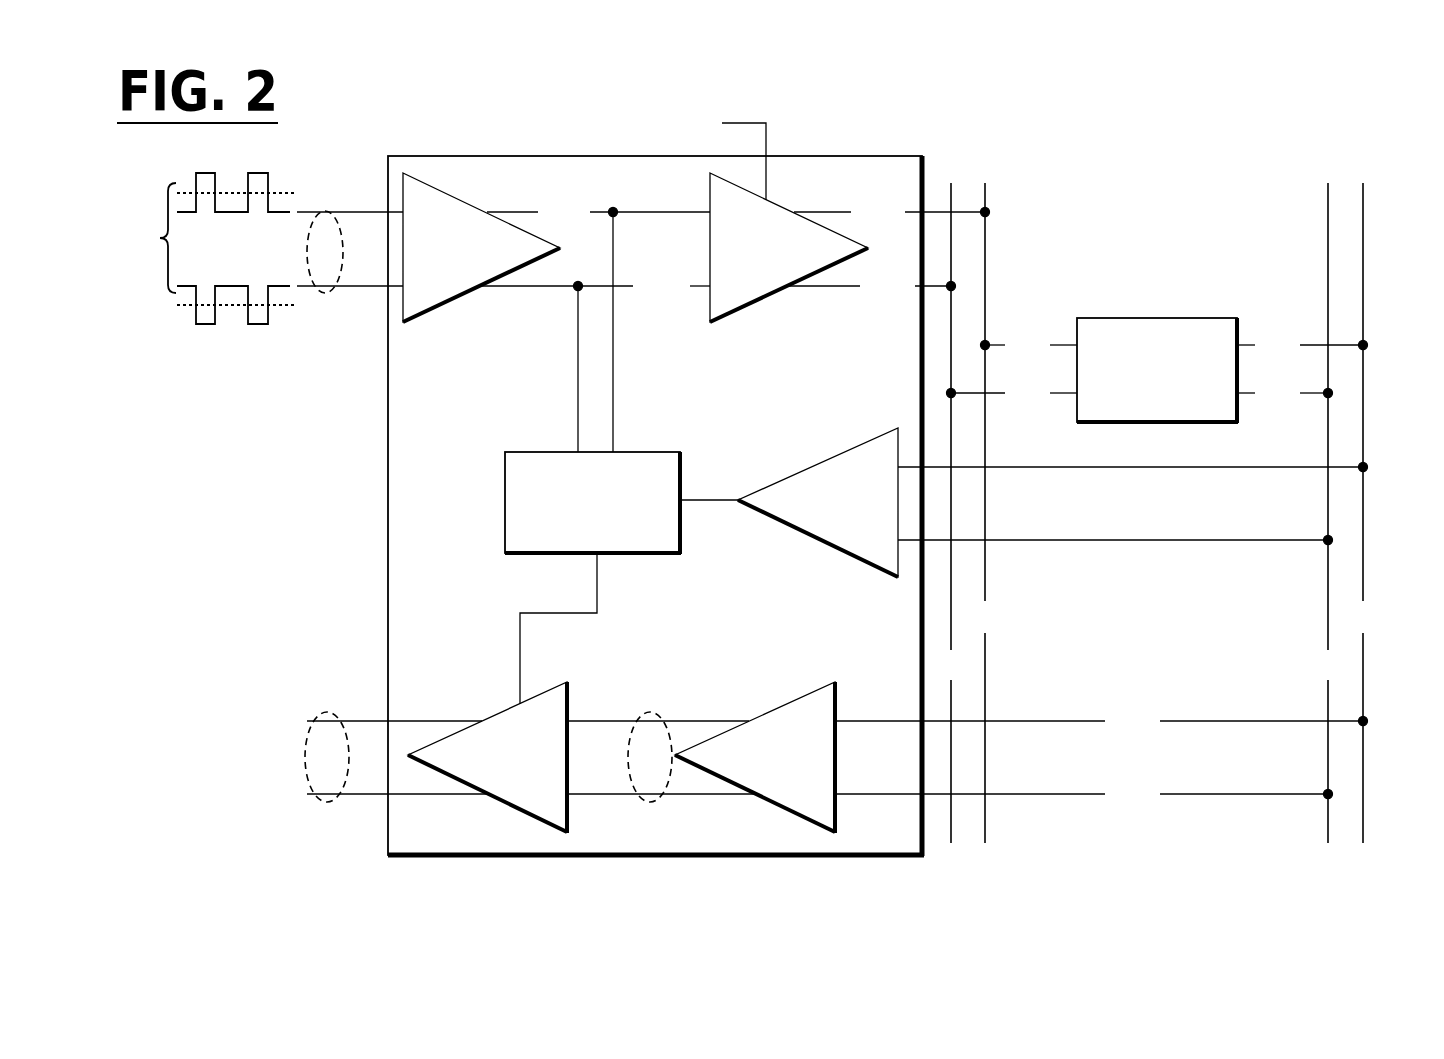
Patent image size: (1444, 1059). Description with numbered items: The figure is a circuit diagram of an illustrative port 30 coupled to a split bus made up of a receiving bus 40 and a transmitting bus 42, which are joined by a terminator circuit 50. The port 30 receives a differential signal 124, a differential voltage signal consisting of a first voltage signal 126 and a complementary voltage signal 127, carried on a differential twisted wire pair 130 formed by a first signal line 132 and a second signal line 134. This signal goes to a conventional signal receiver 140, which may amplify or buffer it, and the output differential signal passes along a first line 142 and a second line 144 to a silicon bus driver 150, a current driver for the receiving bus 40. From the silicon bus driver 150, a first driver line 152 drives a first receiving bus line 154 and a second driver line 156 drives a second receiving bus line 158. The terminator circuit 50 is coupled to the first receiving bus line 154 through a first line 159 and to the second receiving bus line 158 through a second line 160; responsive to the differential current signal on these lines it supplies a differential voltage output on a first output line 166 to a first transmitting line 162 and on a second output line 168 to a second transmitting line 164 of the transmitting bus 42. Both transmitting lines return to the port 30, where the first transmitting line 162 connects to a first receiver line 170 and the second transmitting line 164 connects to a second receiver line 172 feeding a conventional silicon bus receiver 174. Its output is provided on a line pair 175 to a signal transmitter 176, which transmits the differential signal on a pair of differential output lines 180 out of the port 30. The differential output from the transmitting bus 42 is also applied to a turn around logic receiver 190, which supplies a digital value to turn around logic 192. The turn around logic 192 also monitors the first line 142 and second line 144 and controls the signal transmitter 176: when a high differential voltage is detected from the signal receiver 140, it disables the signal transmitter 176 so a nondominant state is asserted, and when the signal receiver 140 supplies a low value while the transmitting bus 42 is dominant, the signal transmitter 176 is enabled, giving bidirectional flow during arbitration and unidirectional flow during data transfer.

The port 30 is at (499, 156).
The receiving bus 40 is at (967, 475).
The transmitting bus 42 is at (1345, 475).
The terminator circuit 50 is at (1157, 370).
The differential signal 124 is at (145, 238).
The first voltage signal 126 is at (207, 171).
The complementary voltage signal 127 is at (207, 327).
The differential twisted wire pair 130 is at (328, 204).
The first signal line 132 is at (357, 210).
The second signal line 134 is at (357, 287).
The signal receiver 140 is at (481, 247).
The first line 142 is at (598, 213).
The second line 144 is at (594, 287).
The silicon bus driver 150 is at (776, 215).
The first driver line 152 is at (892, 213).
The first receiving bus line 154 is at (990, 513).
The second driver line 156 is at (871, 287).
The second receiving bus line 158 is at (950, 513).
The first line 159 is at (1029, 346).
The second line 160 is at (1012, 394).
The first transmitting line 162 is at (1365, 513).
The second transmitting line 164 is at (1328, 513).
The first output line 166 is at (1302, 346).
The second output line 168 is at (1285, 394).
The first receiver line 170 is at (837, 722).
The second receiver line 172 is at (820, 795).
The silicon bus receiver 174 is at (755, 757).
The line pair 175 is at (657, 711).
The signal transmitter 176 is at (487, 757).
The differential output lines 180 is at (332, 711).
The turn around logic receiver 190 is at (1053, 502).
The turn around logic 192 is at (621, 458).